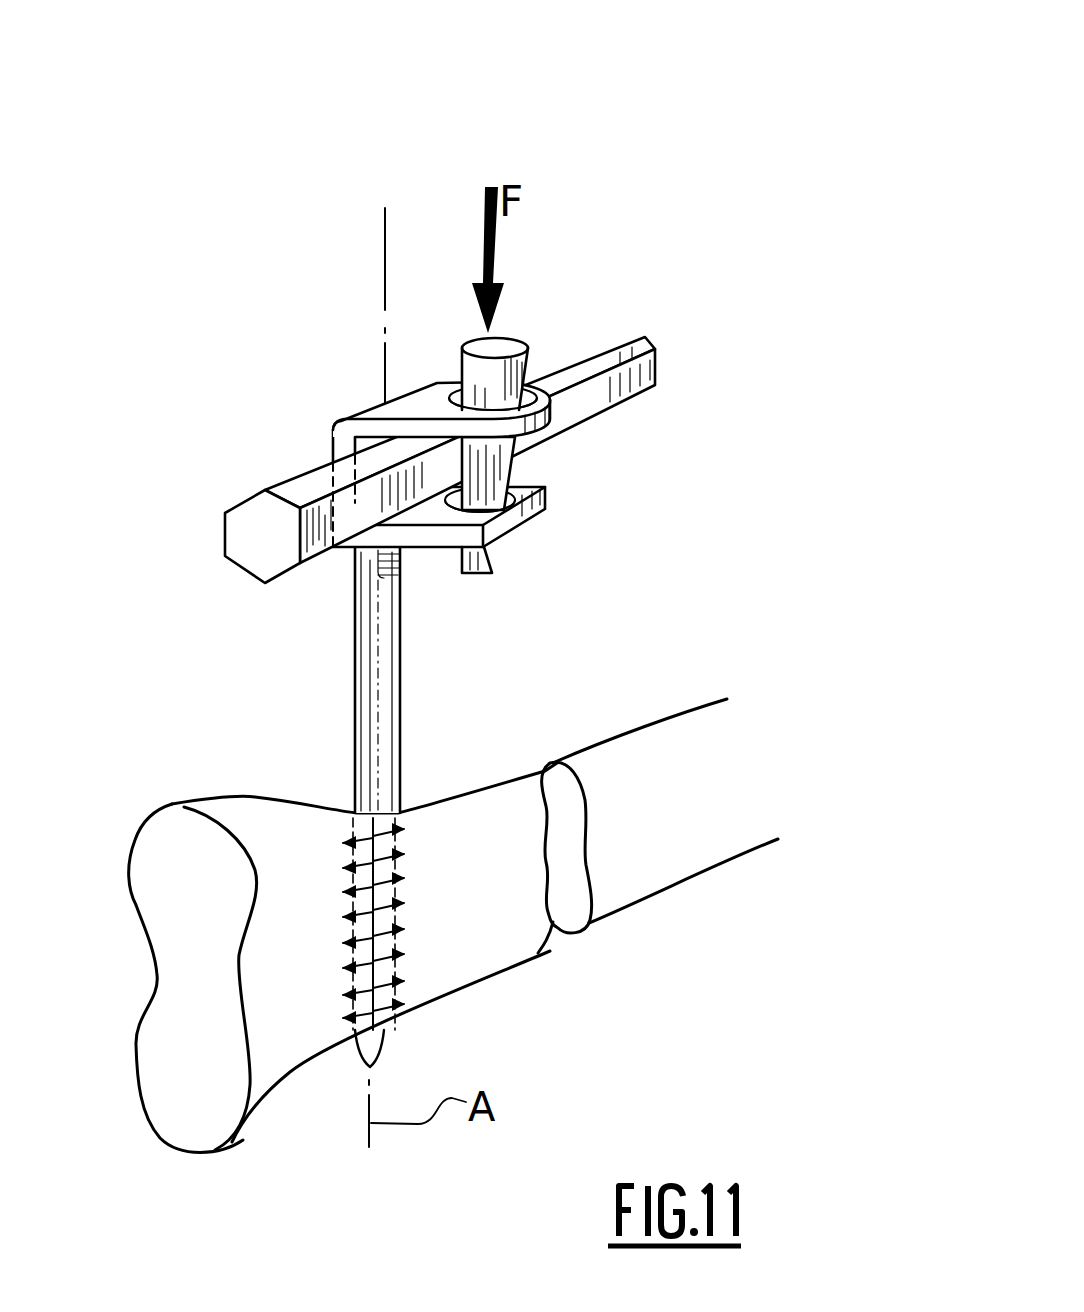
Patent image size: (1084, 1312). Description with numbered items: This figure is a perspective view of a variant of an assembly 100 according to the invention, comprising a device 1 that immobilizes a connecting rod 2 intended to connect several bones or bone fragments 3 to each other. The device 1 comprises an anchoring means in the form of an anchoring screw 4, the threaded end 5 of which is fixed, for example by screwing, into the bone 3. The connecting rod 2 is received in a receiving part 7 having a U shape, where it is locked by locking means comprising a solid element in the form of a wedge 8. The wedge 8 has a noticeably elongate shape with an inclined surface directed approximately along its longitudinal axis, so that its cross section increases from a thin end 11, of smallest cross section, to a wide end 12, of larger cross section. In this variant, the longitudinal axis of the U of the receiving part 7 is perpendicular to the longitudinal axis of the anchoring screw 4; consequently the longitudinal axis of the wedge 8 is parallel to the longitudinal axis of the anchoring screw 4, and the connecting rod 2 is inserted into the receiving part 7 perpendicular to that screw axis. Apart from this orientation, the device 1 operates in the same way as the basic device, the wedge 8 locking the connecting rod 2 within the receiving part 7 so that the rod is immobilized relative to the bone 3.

The assembly 100 is at (387, 153).
The device 1 is at (703, 324).
The connecting rod 2 is at (262, 530).
The bone 3 is at (466, 937).
The anchoring screw 4 is at (367, 704).
The threaded end 5 is at (340, 905).
The receiving part 7 is at (417, 408).
The wedge 8 is at (545, 471).
The thin end 11 is at (508, 550).
The wide end 12 is at (490, 352).